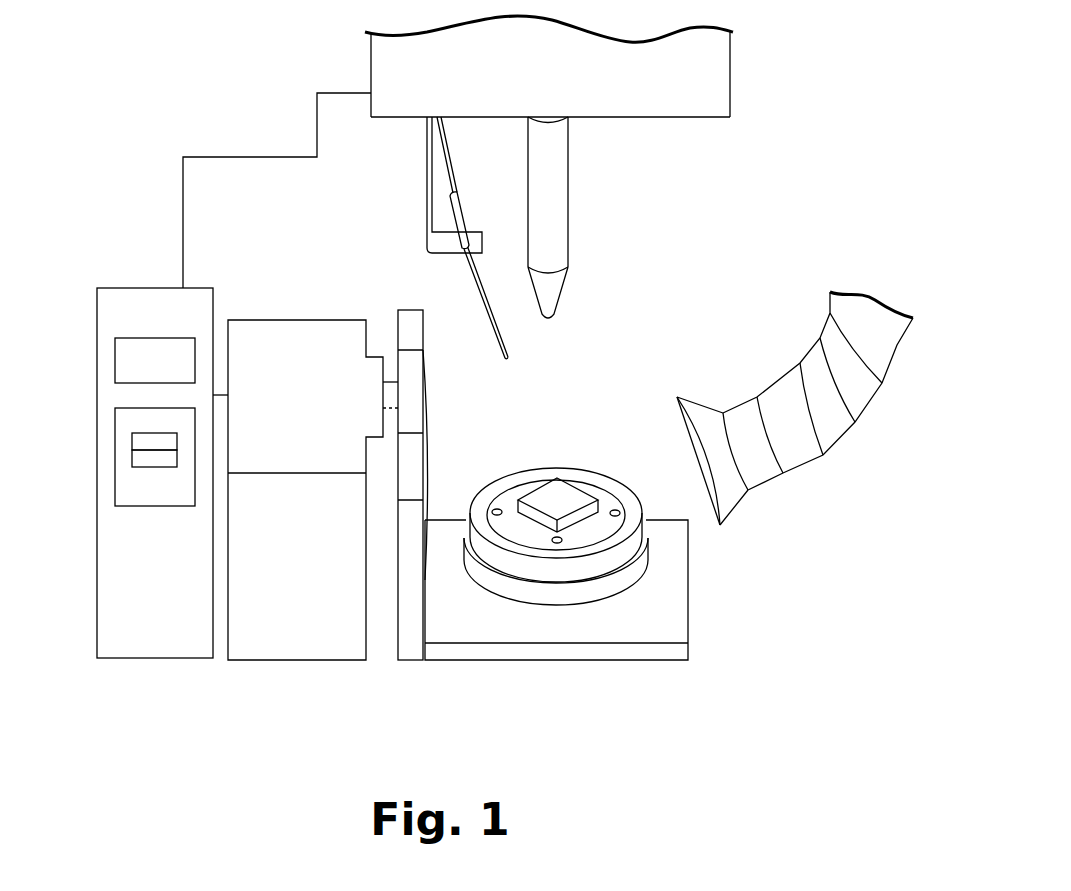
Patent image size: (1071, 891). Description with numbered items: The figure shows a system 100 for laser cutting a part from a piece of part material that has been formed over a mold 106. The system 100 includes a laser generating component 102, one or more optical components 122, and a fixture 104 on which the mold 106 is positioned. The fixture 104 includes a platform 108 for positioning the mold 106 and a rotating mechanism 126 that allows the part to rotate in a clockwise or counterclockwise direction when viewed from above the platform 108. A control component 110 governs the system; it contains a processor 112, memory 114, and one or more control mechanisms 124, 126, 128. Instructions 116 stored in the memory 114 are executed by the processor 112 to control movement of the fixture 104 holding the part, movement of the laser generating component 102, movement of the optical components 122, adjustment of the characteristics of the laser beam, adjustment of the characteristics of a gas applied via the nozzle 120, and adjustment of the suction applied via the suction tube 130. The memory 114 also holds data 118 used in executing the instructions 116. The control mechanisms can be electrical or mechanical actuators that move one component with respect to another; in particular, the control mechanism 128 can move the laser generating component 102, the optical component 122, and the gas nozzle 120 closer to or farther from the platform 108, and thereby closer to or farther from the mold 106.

The system 100 is at (299, 690).
The laser generating component 102 is at (570, 163).
The fixture 104 is at (620, 477).
The mold 106 is at (580, 483).
The platform 108 is at (500, 477).
The control component 110 is at (134, 288).
The processor 112 is at (115, 363).
The memory 114 is at (115, 425).
The instructions 116 is at (132, 440).
The data 118 is at (132, 458).
The nozzle 120 is at (491, 323).
The optical component 122 is at (567, 280).
The control mechanism 124 is at (380, 357).
The rotating mechanism 126 is at (688, 575).
The control mechanism 128 is at (370, 60).
The suction tube 130 is at (677, 422).